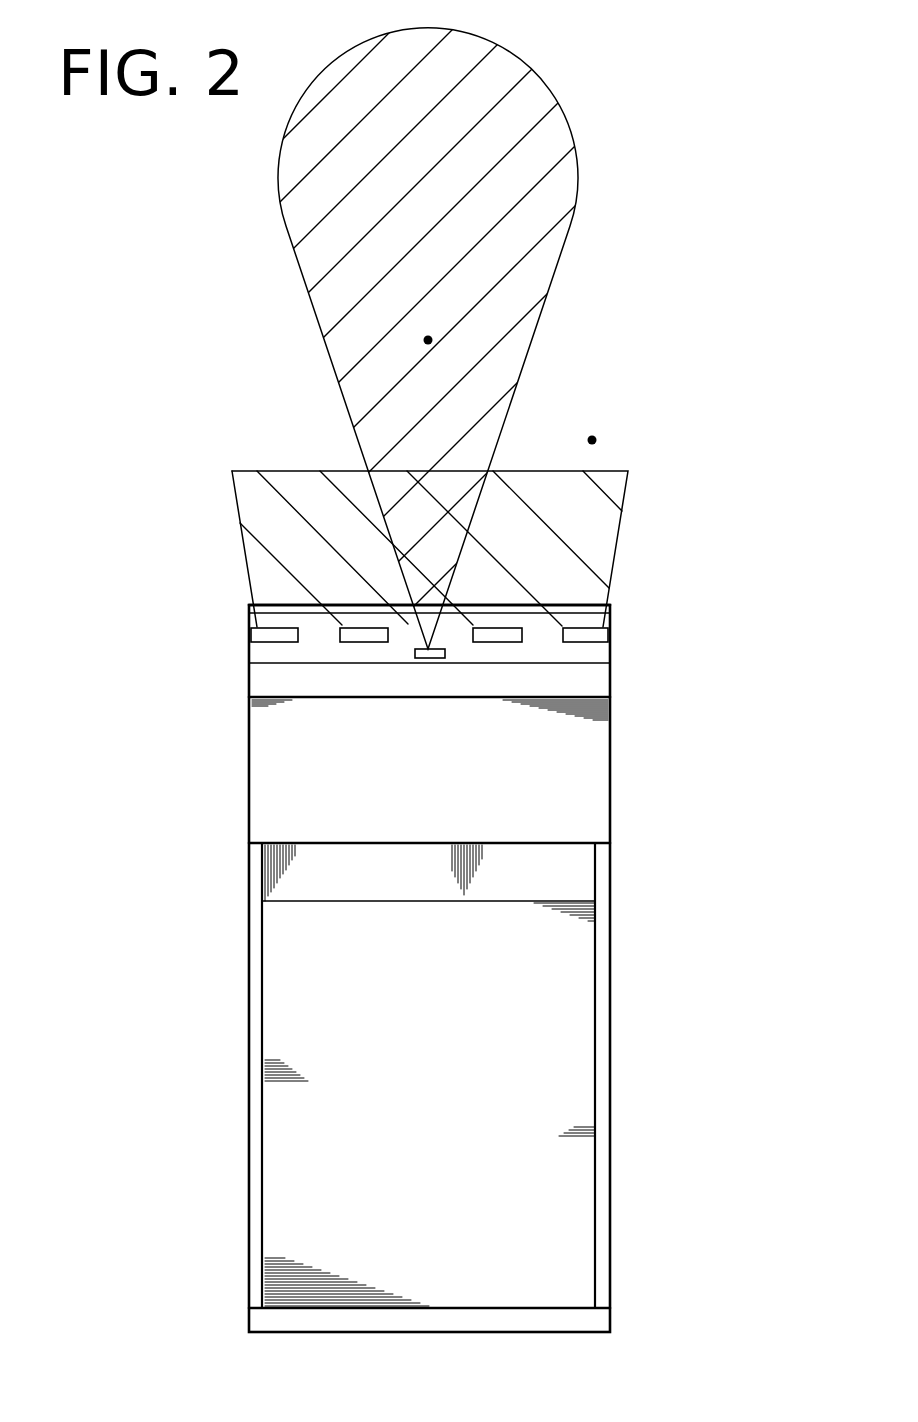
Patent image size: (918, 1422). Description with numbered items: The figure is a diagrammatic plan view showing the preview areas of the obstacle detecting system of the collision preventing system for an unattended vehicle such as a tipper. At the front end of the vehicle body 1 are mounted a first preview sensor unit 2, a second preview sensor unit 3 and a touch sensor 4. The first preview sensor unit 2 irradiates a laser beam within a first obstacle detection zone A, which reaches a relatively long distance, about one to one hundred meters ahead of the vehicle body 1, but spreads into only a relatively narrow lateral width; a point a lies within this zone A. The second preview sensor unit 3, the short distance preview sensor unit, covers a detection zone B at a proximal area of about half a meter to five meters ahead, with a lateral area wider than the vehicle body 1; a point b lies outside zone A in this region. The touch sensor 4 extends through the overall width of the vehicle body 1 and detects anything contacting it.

The vehicle body 1 is at (598, 776).
The first preview sensor unit 2 is at (422, 664).
The second preview sensor unit 3 is at (590, 635).
The touch sensor 4 is at (606, 608).
The first obstacle detection zone A is at (535, 205).
The point in region A a is at (428, 340).
The detection zone B is at (265, 490).
The point in region b is at (592, 440).